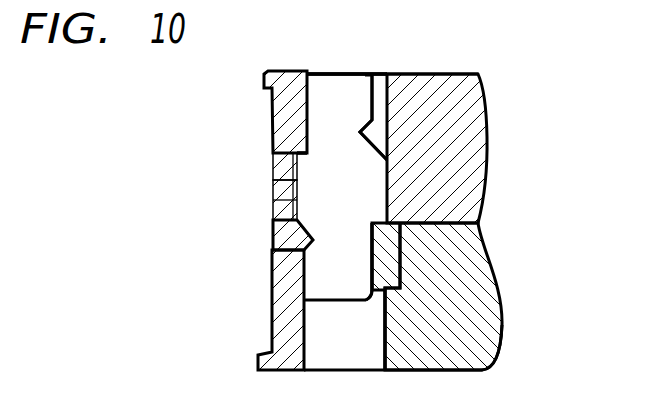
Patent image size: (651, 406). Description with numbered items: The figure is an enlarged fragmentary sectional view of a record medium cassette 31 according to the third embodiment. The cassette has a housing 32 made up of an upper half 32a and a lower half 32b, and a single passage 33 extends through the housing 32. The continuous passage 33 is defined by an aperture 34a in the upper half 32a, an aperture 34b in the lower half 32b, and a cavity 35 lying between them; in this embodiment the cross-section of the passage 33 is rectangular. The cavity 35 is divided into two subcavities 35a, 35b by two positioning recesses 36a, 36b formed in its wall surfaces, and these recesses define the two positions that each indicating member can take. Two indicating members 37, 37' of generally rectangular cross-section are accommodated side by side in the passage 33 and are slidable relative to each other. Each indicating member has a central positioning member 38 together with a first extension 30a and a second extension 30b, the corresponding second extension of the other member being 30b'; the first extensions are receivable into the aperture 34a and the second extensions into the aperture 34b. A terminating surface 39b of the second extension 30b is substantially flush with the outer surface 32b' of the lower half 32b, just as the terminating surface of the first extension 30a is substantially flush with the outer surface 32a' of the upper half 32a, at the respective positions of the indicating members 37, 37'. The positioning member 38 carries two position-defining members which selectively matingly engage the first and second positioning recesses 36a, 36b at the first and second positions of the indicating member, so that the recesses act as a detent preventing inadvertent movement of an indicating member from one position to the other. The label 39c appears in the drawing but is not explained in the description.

The first extension 30a is at (321, 42).
The second extension 30b is at (480, 296).
The second extension 30b' is at (383, 296).
The record medium cassette 31 is at (504, 111).
The housing 32 is at (556, 153).
The upper half 32a is at (470, 148).
The outer surface of upper half 32a' is at (449, 61).
The lower half 32b is at (462, 285).
The outer surface of lower half 32b' is at (442, 387).
The passage 33 is at (341, 353).
The aperture 34a is at (308, 118).
The aperture 34b is at (302, 349).
The cavity 35 is at (180, 193).
The subcavity 35a is at (273, 203).
The subcavity 35b is at (273, 248).
The positioning recess 36a is at (297, 183).
The positioning recess 36b is at (420, 292).
The indicating member 37 is at (421, 87).
The indicating member 37' is at (373, 117).
The positioning member 38 is at (229, 169).
The terminating surface 39b is at (318, 302).
The upper groove 39c is at (322, 78).